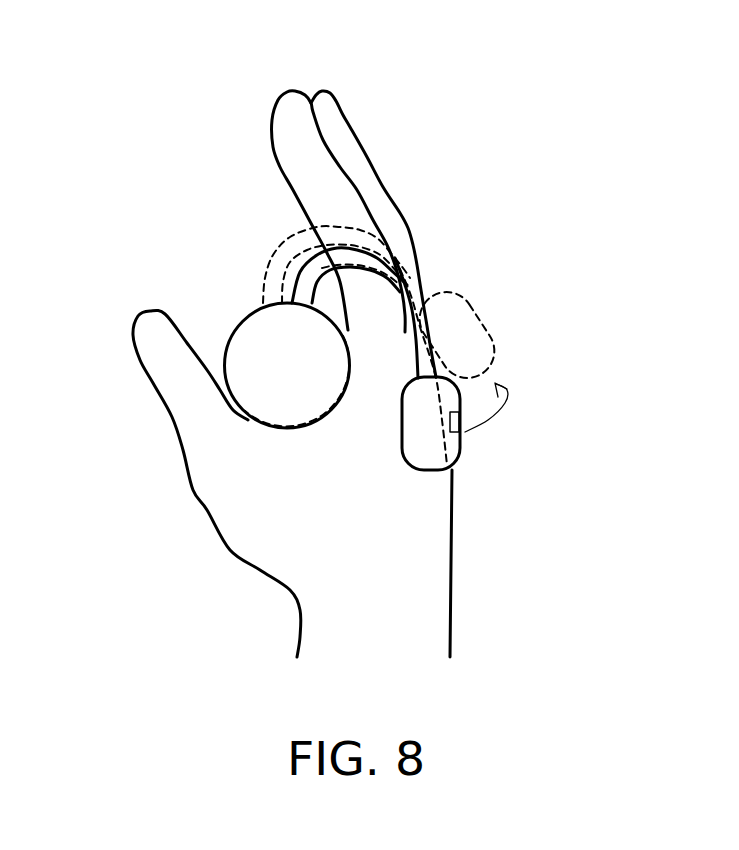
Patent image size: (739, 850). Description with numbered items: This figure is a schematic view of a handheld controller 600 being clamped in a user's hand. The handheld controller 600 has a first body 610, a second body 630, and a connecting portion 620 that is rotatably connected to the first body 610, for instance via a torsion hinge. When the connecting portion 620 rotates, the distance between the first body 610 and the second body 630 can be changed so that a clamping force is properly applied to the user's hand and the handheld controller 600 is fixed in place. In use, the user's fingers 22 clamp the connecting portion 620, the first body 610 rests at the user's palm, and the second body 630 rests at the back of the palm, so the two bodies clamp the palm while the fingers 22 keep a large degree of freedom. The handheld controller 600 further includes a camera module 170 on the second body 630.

The fingers 22 is at (340, 127).
The handheld controller 600 is at (235, 252).
The first body 610 is at (273, 380).
The connecting portion 620 is at (318, 280).
The second body 630 is at (479, 314).
The camera module 170 is at (461, 432).